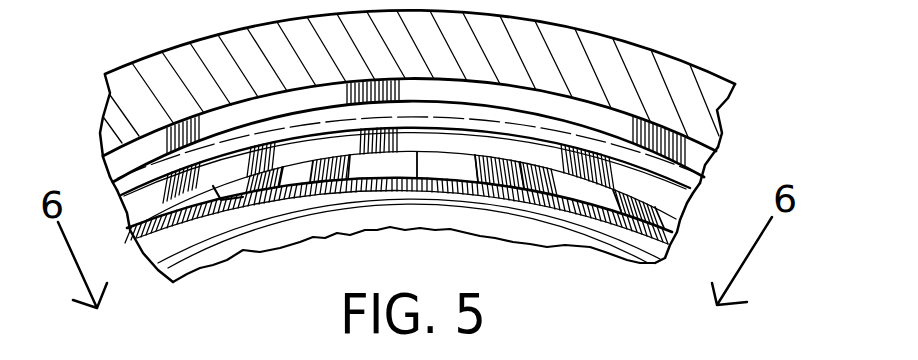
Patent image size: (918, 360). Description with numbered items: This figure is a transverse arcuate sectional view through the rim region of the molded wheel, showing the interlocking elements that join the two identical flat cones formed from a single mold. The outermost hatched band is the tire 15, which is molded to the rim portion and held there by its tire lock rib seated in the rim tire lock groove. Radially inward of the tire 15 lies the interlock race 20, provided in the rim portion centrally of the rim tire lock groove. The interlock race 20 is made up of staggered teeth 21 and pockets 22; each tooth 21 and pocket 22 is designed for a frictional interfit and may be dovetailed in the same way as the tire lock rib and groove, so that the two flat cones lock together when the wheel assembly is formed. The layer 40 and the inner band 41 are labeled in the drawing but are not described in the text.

The tire 15 is at (683, 58).
The interlock race 20 is at (469, 214).
The teeth 21 is at (467, 163).
The pockets 22 is at (358, 168).
The intermediate ring layer 40 is at (113, 191).
The inner band 41 is at (317, 226).